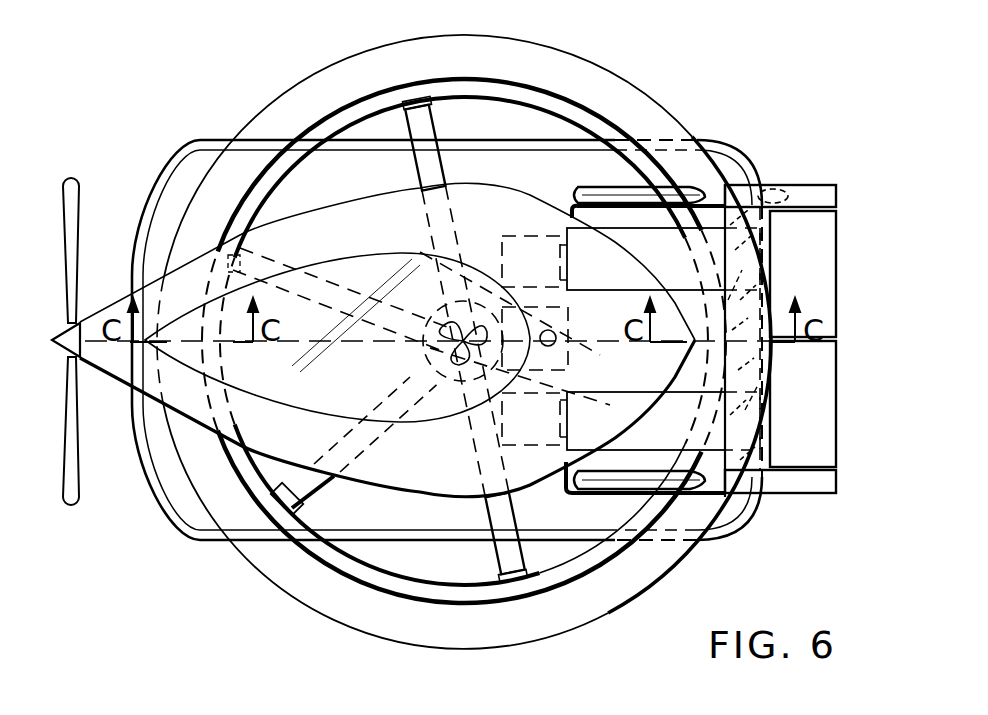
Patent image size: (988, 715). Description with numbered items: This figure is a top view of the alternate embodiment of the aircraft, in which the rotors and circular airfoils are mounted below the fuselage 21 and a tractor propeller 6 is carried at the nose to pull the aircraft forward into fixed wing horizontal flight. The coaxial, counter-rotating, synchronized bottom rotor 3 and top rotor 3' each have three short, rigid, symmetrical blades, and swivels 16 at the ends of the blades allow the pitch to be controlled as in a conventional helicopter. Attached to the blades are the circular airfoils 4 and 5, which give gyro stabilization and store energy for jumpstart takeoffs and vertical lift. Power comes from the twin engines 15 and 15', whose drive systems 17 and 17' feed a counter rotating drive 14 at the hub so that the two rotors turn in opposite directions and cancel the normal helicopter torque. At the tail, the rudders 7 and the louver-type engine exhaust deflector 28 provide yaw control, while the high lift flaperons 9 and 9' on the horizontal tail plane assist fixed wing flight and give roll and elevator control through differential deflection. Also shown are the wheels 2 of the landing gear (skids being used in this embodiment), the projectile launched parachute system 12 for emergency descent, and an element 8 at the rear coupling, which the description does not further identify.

The wheels 2 is at (152, 524).
The bottom rotor 3 is at (387, 327).
The top rotor 3' is at (419, 377).
The circular airfoil 4 is at (312, 62).
The circular airfoil 5 is at (300, 122).
The tractor propeller 6 is at (87, 196).
The rudders 7 is at (717, 184).
The rear coupling 8 is at (749, 184).
The flaperon 9 is at (822, 274).
The flaperon 9' is at (826, 404).
The projectile launched parachute system 12 is at (558, 338).
The counter rotating drive 14 is at (416, 346).
The engine 15 is at (663, 279).
The engine 15' is at (663, 396).
The swivels 16 is at (436, 116).
The drive system 17 is at (546, 264).
The drive system 17' is at (551, 460).
The fuselage 21 is at (343, 197).
The engine exhaust deflector 28 is at (746, 366).